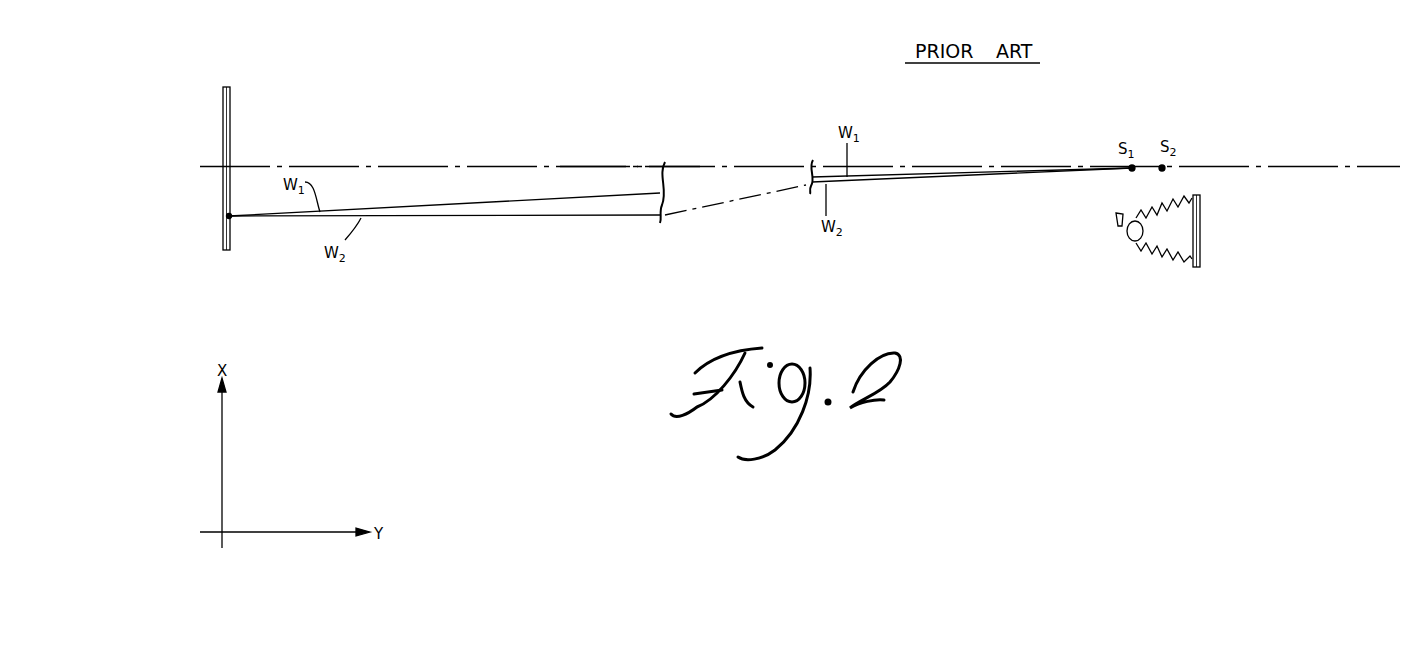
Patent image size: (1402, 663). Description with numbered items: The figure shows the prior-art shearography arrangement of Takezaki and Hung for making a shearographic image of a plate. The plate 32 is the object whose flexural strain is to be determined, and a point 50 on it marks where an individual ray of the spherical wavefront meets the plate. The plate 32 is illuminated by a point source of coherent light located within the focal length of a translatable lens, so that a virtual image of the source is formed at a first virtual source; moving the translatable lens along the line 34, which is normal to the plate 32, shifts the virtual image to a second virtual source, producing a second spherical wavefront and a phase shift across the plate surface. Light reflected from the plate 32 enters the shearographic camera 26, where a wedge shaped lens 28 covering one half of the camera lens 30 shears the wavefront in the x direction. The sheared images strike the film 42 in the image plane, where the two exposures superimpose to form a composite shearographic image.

The plate 32 is at (230, 100).
The line 34 is at (636, 166).
The object point 50 is at (229, 216).
The wedge shaped lens 28 is at (1115, 216).
The camera lens 30 is at (1131, 237).
The shearographic camera 26 is at (1178, 262).
The film 42 is at (1200, 218).